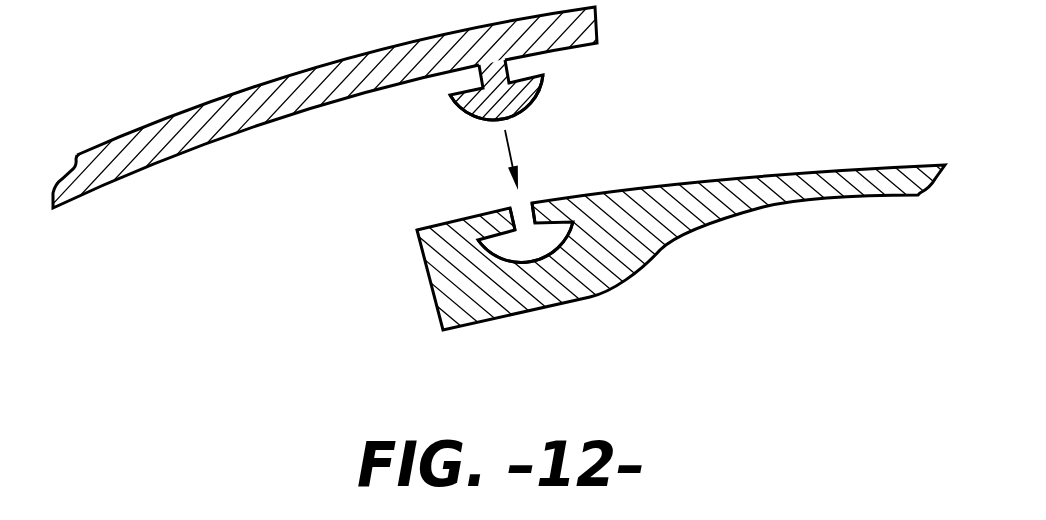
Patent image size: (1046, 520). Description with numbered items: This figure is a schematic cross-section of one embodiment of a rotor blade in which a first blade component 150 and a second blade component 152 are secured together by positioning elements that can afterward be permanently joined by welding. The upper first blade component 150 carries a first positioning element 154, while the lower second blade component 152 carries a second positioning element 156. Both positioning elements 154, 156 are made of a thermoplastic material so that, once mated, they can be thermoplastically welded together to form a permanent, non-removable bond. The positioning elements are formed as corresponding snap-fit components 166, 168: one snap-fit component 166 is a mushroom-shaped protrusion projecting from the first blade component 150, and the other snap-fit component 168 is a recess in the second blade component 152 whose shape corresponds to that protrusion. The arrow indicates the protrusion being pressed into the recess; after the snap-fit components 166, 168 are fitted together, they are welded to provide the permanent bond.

The first blade component 150 is at (288, 76).
The second blade component 152 is at (730, 215).
The first positioning element 154 is at (532, 103).
The second positioning element 156 is at (545, 233).
The snap-fit component 166 is at (473, 118).
The snap-fit component 168 is at (527, 232).